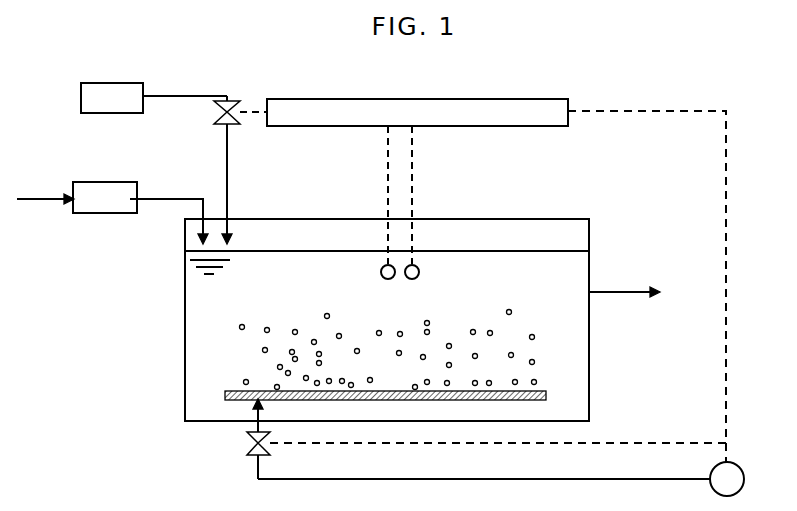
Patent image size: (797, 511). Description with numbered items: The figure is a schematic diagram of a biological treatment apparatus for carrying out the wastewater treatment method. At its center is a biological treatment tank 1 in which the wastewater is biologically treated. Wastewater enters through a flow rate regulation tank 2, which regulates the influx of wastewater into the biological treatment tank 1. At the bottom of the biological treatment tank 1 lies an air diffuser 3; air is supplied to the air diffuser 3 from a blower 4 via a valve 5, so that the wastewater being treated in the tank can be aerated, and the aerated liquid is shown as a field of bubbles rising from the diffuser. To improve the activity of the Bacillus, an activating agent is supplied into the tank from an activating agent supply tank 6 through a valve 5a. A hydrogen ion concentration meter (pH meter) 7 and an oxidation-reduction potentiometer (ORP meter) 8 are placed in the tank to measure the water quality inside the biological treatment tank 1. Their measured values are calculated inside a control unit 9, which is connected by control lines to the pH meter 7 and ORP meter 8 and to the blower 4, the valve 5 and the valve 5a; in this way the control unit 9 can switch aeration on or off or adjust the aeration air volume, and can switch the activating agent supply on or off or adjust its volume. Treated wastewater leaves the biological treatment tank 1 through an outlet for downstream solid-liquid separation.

The biological treatment tank 1 is at (387, 321).
The flow rate regulation tank 2 is at (112, 201).
The air diffuser 3 is at (385, 383).
The blower 4 is at (513, 479).
The valve 5 is at (479, 440).
The valve 5a is at (228, 170).
The activating agent supply tank 6 is at (154, 84).
The hydrogen ion concentration meter (pH meter) 7 is at (388, 288).
The oxidation-reduction potentiometer (ORP meter) 8 is at (412, 287).
The control unit 9 is at (496, 267).